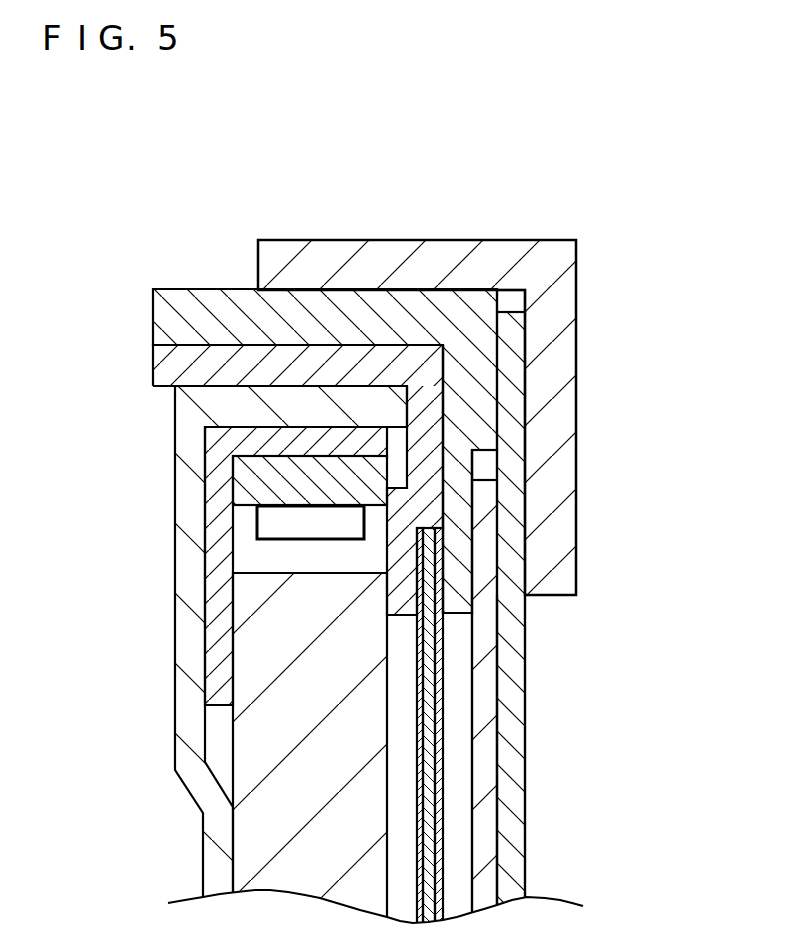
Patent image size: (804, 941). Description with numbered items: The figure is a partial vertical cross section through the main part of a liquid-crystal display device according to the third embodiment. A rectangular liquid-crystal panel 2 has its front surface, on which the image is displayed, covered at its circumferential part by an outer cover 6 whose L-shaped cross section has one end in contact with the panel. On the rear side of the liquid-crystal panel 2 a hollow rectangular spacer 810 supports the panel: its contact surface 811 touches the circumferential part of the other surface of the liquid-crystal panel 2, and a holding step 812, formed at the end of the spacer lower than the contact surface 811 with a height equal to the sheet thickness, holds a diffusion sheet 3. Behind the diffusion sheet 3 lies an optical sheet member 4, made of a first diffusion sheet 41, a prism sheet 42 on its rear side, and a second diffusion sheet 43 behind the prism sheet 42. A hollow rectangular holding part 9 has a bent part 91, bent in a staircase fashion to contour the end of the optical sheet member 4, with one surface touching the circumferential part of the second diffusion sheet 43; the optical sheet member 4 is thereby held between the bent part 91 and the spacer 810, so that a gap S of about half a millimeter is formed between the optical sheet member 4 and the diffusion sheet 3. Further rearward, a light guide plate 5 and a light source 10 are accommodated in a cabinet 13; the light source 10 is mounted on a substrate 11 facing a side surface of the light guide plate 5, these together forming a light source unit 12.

The liquid-crystal panel 2 is at (517, 730).
The diffusion sheet 3 is at (487, 688).
The optical sheet member 4 is at (554, 726).
The first diffusion sheet 41 is at (438, 810).
The prism sheet 42 is at (428, 833).
The second diffusion sheet 43 is at (420, 868).
The light guide plate 5 is at (240, 770).
The outer cover 6 is at (493, 248).
The holding part 9 is at (162, 358).
The bent part 91 is at (395, 555).
The light source 10 is at (262, 527).
The substrate 11 is at (247, 492).
The light source unit 12 is at (207, 566).
The cabinet 13 is at (185, 690).
The spacer 810 is at (205, 295).
The contact surface 811 is at (500, 355).
The holding step 812 is at (455, 497).
The gap S is at (457, 760).